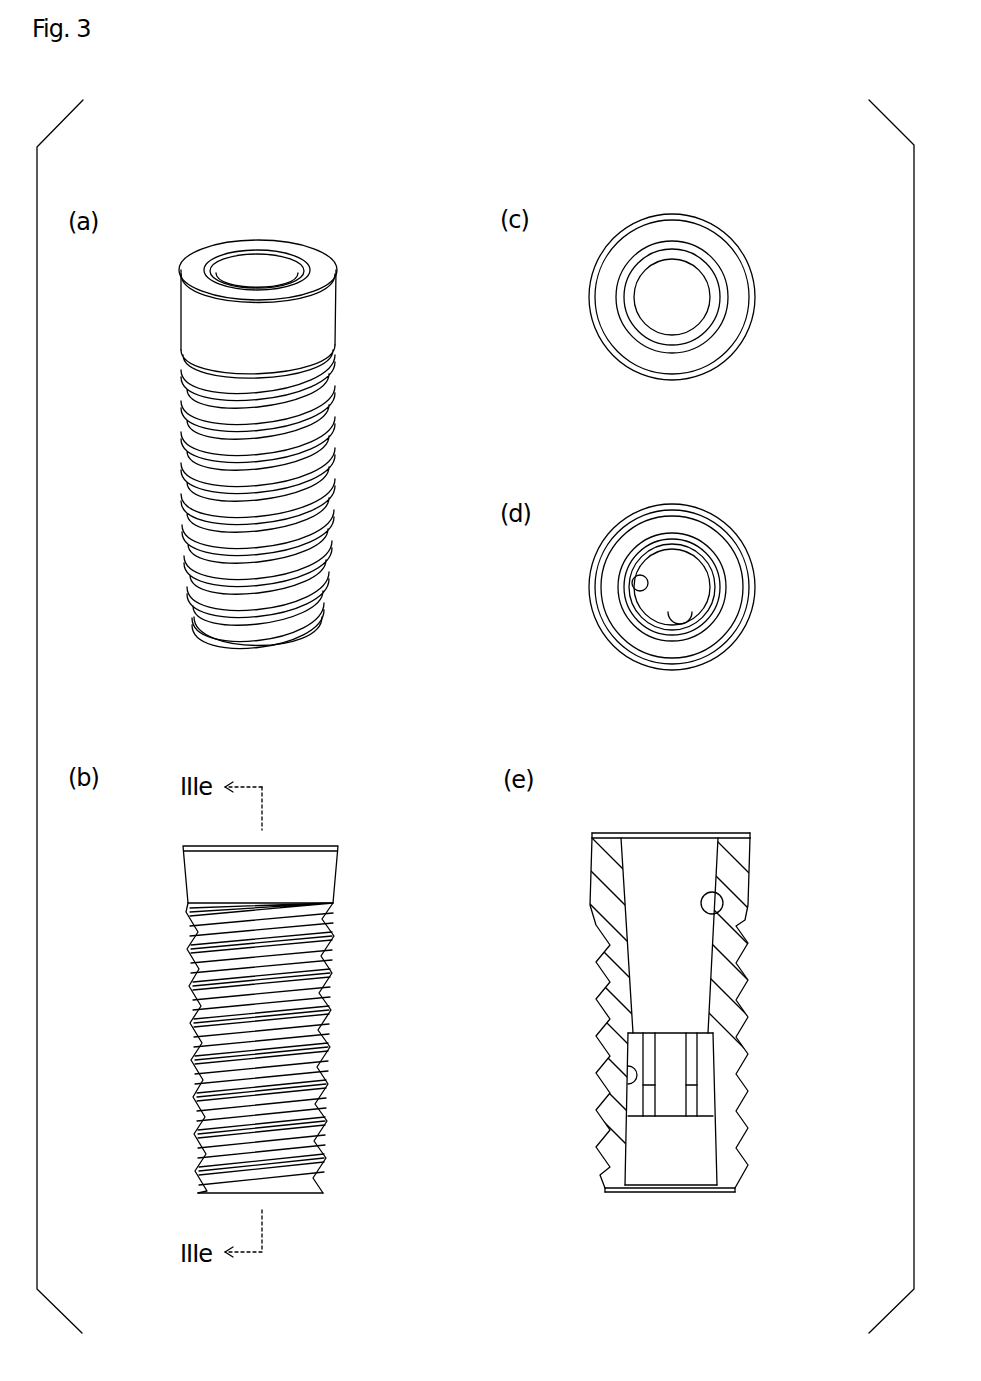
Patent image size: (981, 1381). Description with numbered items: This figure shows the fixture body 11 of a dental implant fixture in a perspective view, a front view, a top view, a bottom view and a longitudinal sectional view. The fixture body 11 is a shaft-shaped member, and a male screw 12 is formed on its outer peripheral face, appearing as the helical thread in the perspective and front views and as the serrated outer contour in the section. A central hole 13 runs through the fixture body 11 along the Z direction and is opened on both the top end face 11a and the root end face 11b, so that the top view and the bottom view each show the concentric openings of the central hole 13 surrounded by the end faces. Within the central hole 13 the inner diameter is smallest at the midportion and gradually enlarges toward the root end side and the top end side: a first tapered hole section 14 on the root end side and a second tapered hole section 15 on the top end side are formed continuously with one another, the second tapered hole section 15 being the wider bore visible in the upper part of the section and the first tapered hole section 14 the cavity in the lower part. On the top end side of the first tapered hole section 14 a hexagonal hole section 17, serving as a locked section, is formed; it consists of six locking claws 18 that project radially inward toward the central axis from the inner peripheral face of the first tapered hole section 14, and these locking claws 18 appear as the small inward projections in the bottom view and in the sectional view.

The fixture body 11 is at (213, 222).
The top end face 11a is at (728, 268).
The root end face 11b is at (722, 612).
The male screw 12 is at (340, 400).
The central hole 13 is at (268, 278).
The first tapered hole section 14 is at (712, 553).
The second tapered hole section 15 is at (705, 312).
The hexagonal hole section 17 is at (688, 607).
The locking claws 18 is at (620, 1090).